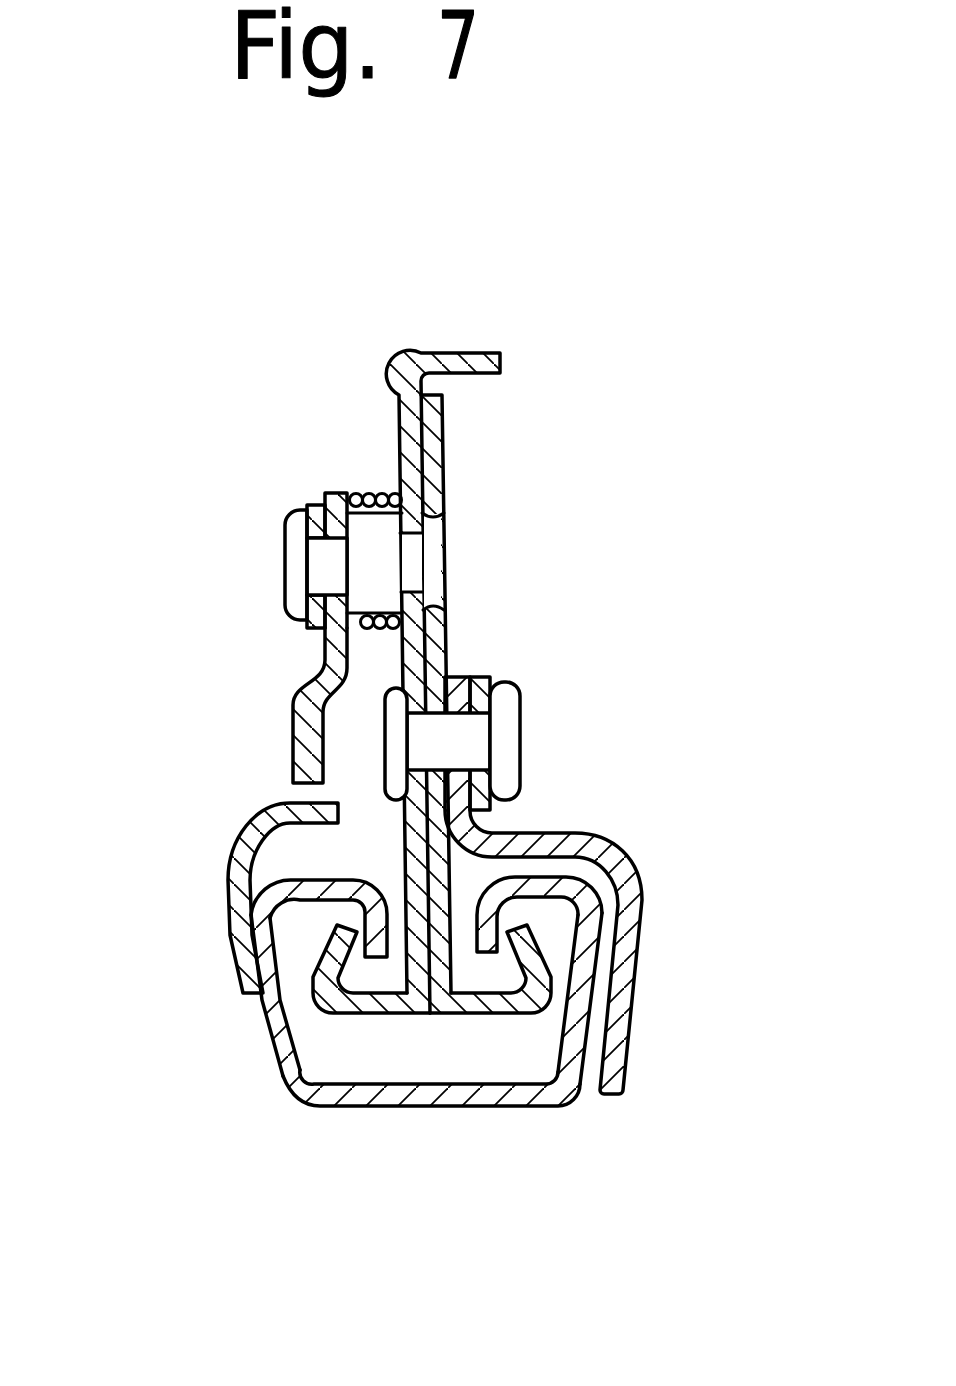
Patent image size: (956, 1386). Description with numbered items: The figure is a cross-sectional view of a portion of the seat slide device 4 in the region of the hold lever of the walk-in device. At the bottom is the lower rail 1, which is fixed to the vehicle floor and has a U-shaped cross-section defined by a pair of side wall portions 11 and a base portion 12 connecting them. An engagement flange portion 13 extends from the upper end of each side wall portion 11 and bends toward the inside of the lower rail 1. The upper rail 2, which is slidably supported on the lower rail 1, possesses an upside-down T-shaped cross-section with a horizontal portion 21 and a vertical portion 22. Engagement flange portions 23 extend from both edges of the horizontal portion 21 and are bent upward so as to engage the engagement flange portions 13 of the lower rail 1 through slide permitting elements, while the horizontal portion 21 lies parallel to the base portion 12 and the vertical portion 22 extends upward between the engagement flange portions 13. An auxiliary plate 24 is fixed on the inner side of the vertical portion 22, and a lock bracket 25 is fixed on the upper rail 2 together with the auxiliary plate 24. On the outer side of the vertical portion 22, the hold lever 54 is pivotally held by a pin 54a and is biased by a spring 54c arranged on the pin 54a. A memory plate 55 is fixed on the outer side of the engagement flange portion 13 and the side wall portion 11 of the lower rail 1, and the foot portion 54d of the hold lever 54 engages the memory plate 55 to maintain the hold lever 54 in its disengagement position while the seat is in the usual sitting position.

The lower rail 1 is at (448, 988).
The side wall portion 11 is at (282, 1028).
The base portion 12 is at (488, 1094).
The engagement flange portion 13 is at (316, 880).
The upper rail 2 is at (443, 714).
The horizontal portion 21 is at (407, 990).
The vertical portion 22 is at (415, 665).
The engagement flange portion 23 is at (325, 948).
The auxiliary plate 24 is at (548, 843).
The lock bracket 25 is at (487, 672).
The seat slide device 4 is at (537, 750).
The hold lever 54 is at (269, 550).
The pin 54a is at (363, 560).
The spring 54c is at (370, 494).
The foot portion 54d is at (305, 733).
The memory plate 55 is at (237, 890).